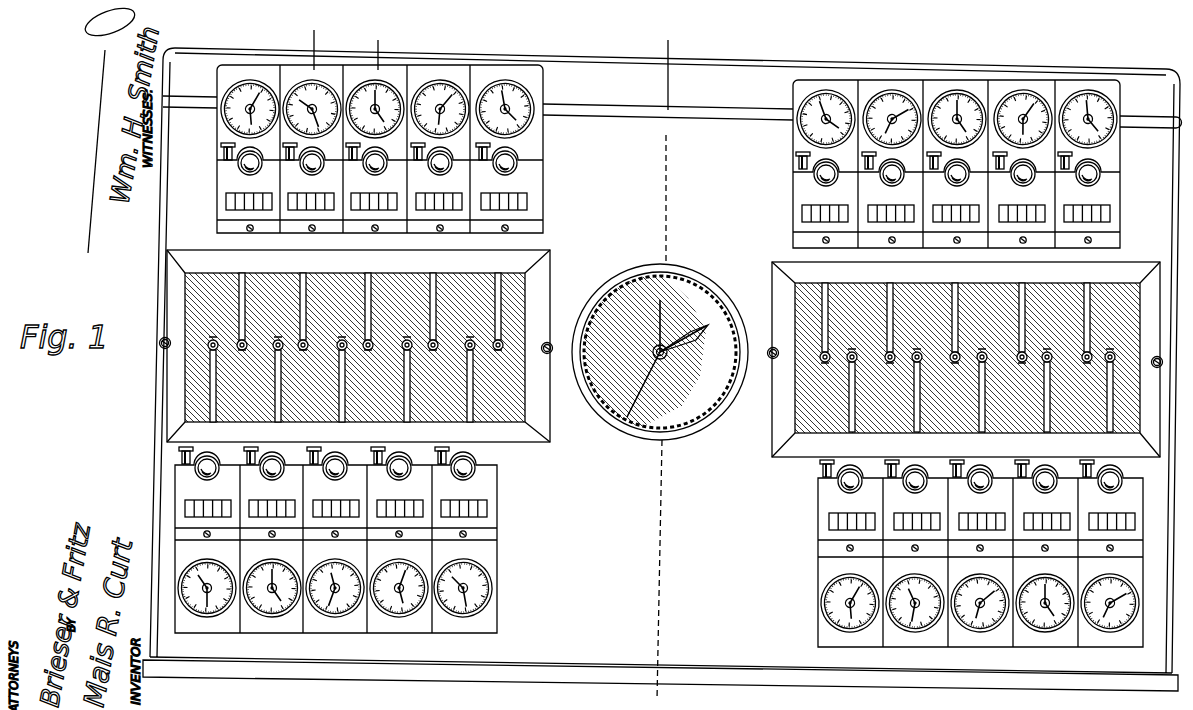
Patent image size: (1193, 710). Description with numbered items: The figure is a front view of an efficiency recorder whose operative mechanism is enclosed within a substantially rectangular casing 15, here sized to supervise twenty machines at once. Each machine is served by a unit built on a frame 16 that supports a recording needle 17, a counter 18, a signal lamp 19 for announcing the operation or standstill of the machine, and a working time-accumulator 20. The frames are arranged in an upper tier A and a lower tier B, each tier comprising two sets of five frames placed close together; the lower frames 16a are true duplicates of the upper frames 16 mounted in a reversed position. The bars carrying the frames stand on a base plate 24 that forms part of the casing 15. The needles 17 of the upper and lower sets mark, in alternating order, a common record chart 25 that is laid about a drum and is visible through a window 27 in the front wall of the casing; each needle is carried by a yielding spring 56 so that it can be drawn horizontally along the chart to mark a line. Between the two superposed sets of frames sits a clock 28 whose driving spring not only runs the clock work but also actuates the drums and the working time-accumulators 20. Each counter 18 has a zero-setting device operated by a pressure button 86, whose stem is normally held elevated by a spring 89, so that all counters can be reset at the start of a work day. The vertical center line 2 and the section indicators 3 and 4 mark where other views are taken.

The central section line 2 is at (663, 361).
The section line indicator 3 is at (360, 35).
The section line indicator 4 is at (333, 28).
The casing 15 is at (672, 126).
The frame 16 is at (463, 182).
The lower frame 16a is at (420, 555).
The recording needle 17 is at (498, 350).
The counter 18 is at (287, 206).
The signal lamp 19 is at (375, 166).
The working time-accumulator 20 is at (502, 86).
The base plate 24 is at (566, 673).
The record chart 25 is at (195, 395).
The window 27 is at (549, 289).
The clock 28 is at (674, 425).
The spring 56 is at (279, 390).
The pressure button 86 is at (222, 148).
The spring 89 is at (237, 163).
The upper tier A is at (655, 167).
The lower tier B is at (646, 540).